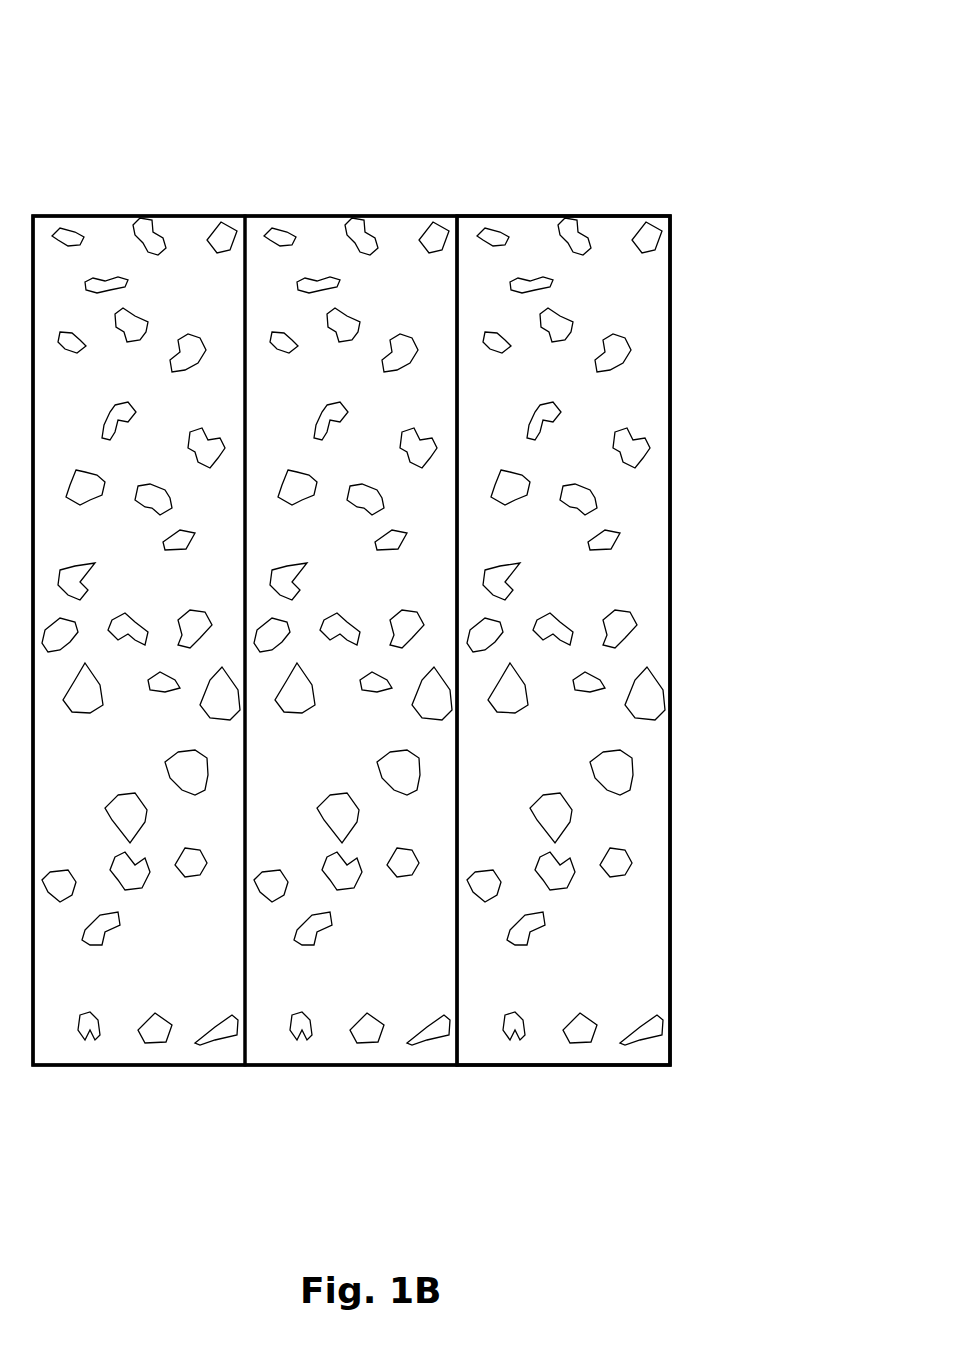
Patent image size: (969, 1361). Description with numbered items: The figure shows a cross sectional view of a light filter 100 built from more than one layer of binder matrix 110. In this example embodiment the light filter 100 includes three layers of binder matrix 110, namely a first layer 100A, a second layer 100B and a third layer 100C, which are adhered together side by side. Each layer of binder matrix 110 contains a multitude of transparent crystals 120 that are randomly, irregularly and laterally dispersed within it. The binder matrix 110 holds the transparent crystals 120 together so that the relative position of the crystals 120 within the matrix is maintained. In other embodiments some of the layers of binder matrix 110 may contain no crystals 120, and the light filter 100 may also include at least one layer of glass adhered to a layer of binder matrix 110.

The light filter 100 is at (610, 120).
The first layer of binder matrix 100A is at (128, 1091).
The second layer of binder matrix 100B is at (334, 1091).
The third layer of binder matrix 100C is at (536, 1091).
The binder matrix 110 is at (647, 562).
The transparent crystals 120 is at (623, 443).